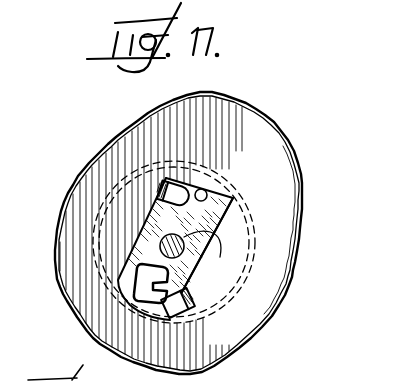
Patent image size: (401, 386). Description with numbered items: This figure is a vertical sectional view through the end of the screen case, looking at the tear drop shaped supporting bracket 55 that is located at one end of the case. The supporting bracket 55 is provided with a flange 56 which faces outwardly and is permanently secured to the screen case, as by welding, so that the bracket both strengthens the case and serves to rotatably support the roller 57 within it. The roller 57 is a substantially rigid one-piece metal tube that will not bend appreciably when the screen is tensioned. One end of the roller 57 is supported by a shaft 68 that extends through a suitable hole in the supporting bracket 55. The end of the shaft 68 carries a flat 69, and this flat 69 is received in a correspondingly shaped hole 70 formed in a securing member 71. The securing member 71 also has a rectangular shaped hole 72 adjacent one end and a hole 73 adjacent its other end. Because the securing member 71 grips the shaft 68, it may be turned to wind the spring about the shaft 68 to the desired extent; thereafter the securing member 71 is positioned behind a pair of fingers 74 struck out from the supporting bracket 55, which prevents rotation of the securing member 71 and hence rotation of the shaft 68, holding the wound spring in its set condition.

The supporting bracket 55 is at (280, 189).
The flange 56 is at (286, 274).
The roller 57 is at (233, 305).
The shaft 68 is at (162, 247).
The flat 69 is at (209, 254).
The hole 70 is at (160, 236).
The securing member 71 is at (182, 276).
The rectangular shaped hole 72 is at (124, 284).
The hole 73 is at (205, 191).
The fingers 74 is at (174, 184).